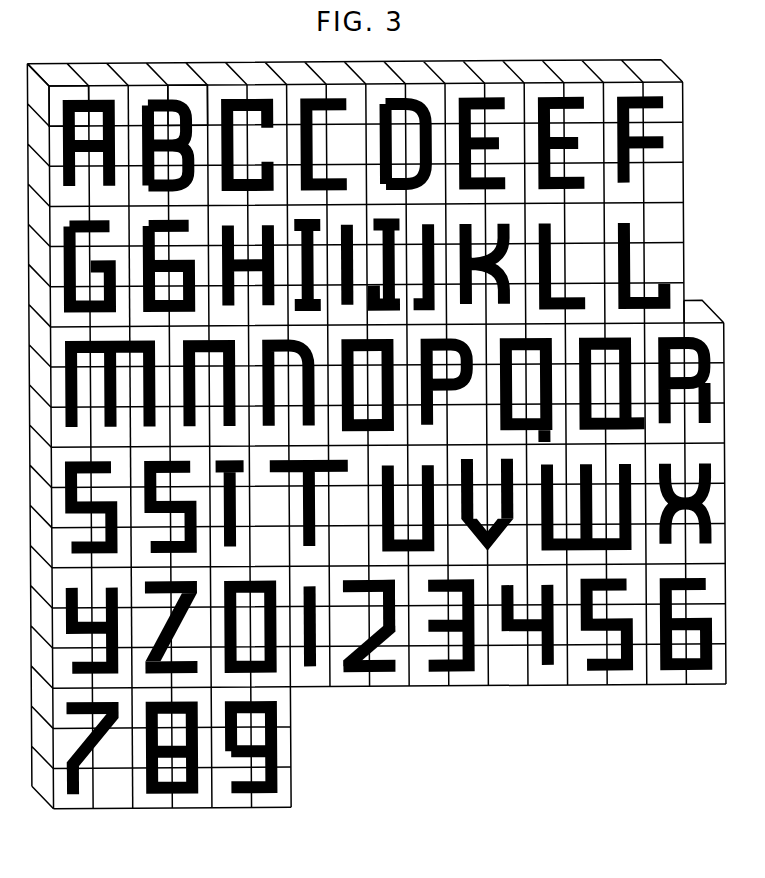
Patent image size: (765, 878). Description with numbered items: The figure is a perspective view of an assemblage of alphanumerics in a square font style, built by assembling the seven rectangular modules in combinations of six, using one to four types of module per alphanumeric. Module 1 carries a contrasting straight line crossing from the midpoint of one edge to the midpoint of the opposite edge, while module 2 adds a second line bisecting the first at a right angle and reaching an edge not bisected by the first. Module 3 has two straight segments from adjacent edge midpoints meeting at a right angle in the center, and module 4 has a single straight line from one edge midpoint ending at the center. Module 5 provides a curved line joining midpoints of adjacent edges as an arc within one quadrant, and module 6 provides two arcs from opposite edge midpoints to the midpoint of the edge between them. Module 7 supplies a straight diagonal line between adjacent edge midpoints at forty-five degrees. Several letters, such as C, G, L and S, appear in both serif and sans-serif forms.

The module 1 is at (293, 140).
The module 2 is at (135, 140).
The module 3 is at (64, 90).
The module 4 is at (576, 87).
The module 5 is at (188, 91).
The module 6 is at (713, 378).
The module 7 is at (393, 632).